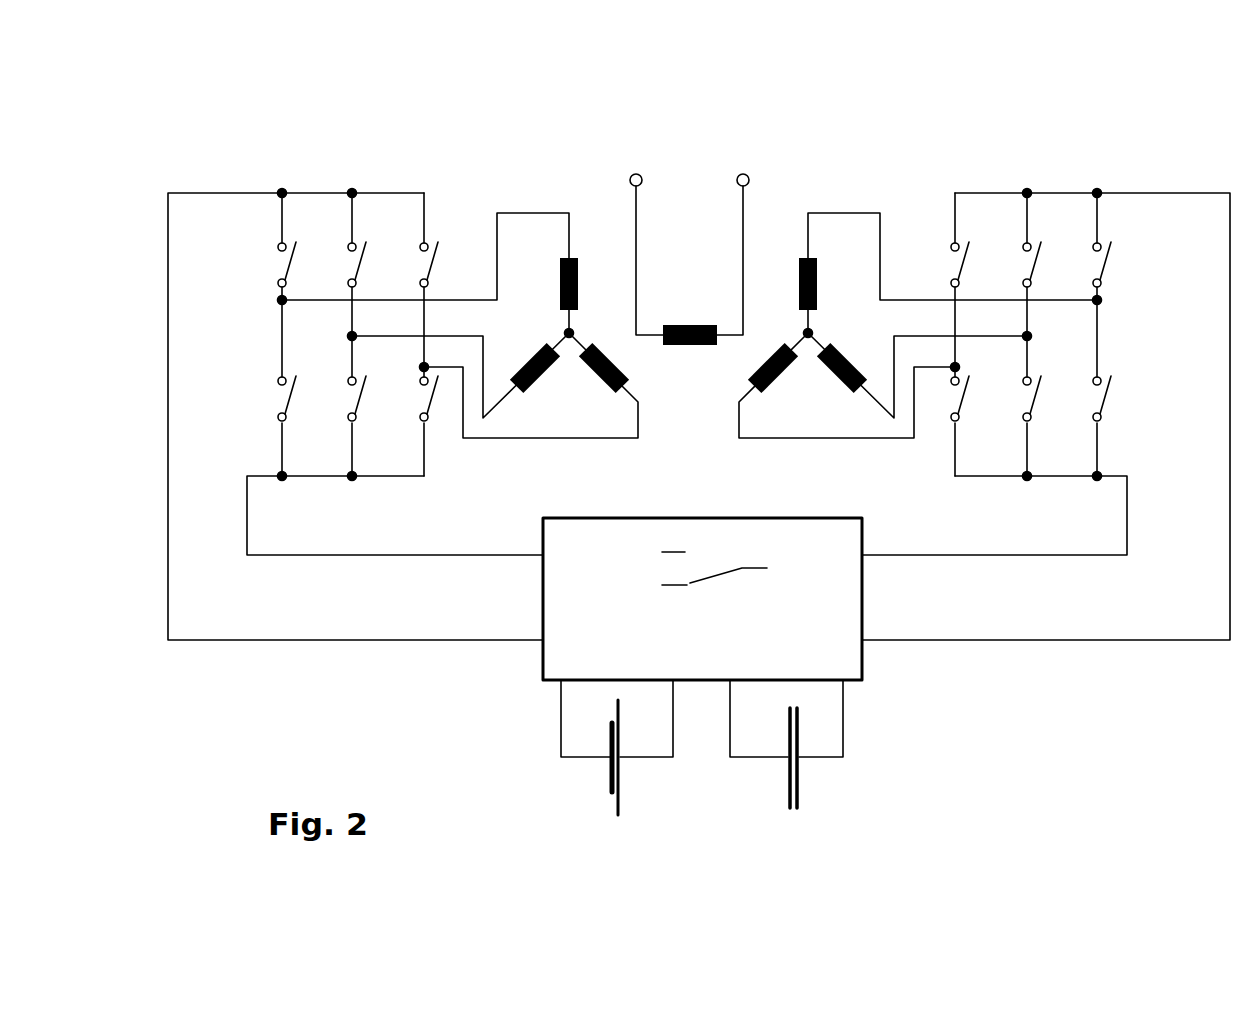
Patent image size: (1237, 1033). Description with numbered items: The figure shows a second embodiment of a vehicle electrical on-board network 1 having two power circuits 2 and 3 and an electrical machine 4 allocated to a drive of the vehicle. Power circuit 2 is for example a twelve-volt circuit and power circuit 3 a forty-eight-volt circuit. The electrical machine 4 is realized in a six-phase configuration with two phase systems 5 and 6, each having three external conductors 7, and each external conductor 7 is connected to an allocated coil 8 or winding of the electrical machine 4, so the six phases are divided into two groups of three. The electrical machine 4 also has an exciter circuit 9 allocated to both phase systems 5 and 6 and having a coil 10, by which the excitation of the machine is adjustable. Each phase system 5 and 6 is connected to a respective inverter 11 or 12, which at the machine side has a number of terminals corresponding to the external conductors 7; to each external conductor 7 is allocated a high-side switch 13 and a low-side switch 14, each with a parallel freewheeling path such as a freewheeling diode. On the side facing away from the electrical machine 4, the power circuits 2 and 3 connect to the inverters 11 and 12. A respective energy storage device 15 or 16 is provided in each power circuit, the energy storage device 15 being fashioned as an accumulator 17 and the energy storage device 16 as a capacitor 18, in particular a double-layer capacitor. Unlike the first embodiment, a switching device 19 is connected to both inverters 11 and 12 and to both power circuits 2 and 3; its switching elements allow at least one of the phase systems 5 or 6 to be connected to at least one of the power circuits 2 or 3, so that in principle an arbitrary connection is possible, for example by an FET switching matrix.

The on-board network 1 is at (840, 106).
The power circuit 2 is at (639, 783).
The power circuit 3 is at (838, 782).
The electrical machine 4 is at (655, 133).
The phase system 5 is at (485, 175).
The phase system 6 is at (800, 150).
The external conductor 7 is at (535, 213).
The coil 8 is at (572, 258).
The exciter circuit 9 is at (685, 160).
The coil 10 is at (682, 326).
The inverter 11 is at (350, 135).
The inverter 12 is at (1080, 165).
The high-side switch 13 is at (280, 267).
The low-side switch 14 is at (285, 398).
The energy storage device 15 is at (665, 777).
The energy storage device 16 is at (868, 765).
The accumulator 17 is at (625, 767).
The capacitor 18 is at (806, 766).
The switching device 19 is at (850, 662).